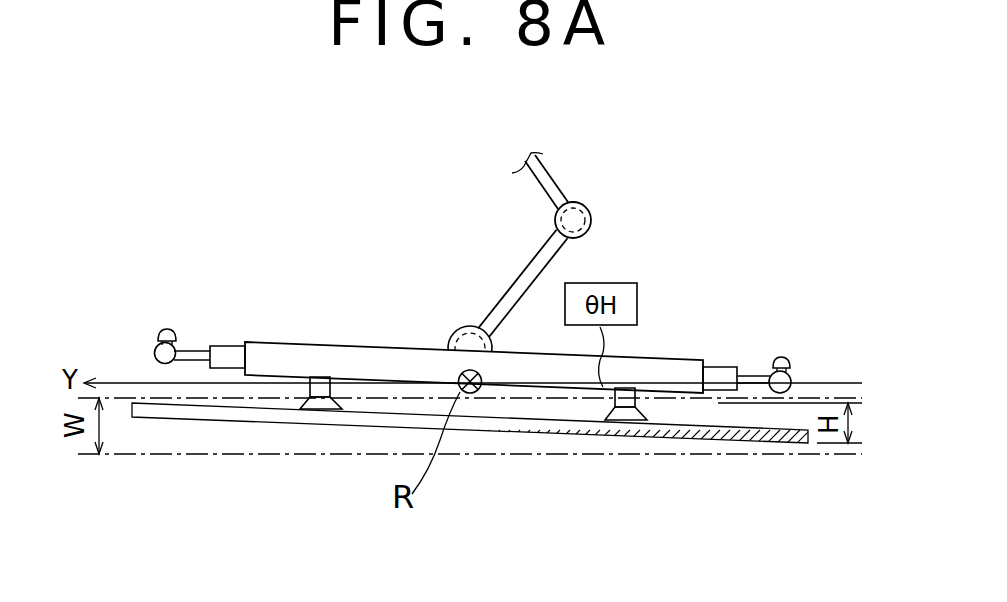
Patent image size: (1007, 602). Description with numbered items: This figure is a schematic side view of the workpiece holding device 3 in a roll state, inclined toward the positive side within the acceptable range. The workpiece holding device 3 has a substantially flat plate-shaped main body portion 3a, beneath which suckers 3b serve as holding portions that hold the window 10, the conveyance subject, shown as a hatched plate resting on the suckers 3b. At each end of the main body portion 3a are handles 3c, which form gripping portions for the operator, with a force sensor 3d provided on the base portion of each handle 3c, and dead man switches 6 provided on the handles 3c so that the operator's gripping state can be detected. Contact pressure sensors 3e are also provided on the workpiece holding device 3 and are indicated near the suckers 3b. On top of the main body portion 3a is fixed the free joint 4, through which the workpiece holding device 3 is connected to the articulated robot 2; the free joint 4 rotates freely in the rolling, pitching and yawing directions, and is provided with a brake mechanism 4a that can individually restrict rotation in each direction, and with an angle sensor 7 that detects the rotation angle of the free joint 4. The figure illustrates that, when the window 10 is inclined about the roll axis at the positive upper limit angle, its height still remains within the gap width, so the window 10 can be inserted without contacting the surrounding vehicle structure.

The articulated robot 2 is at (598, 243).
The workpiece holding device 3 is at (368, 258).
The main body portion 3a is at (286, 341).
The sucker 3b is at (303, 407).
The handle 3c is at (193, 350).
The force sensor 3d is at (230, 345).
The contact pressure sensor 3e is at (310, 391).
The free joint 4 is at (468, 326).
The brake mechanism 4a is at (450, 333).
The dead man switch 6 is at (166, 328).
The angle sensor 7 is at (492, 333).
The window 10 is at (500, 430).